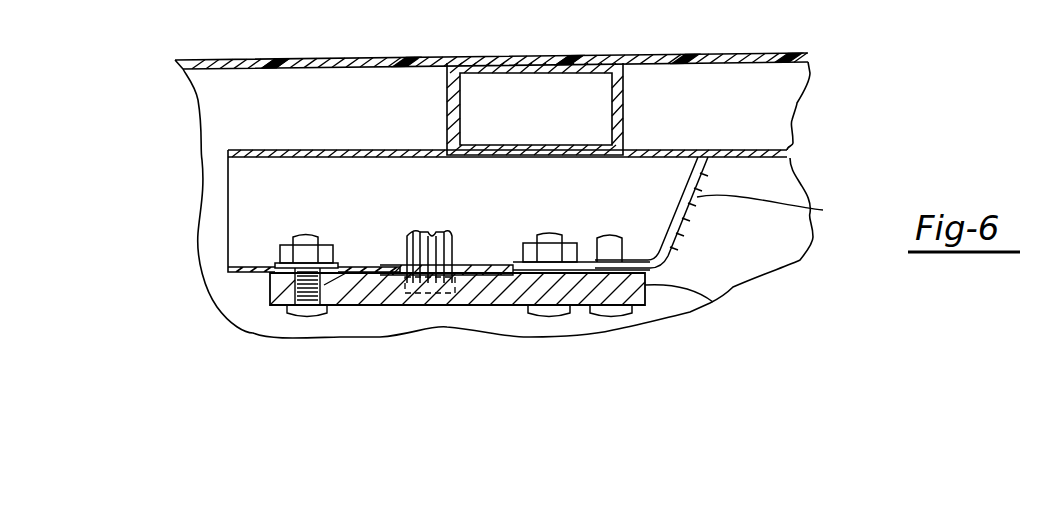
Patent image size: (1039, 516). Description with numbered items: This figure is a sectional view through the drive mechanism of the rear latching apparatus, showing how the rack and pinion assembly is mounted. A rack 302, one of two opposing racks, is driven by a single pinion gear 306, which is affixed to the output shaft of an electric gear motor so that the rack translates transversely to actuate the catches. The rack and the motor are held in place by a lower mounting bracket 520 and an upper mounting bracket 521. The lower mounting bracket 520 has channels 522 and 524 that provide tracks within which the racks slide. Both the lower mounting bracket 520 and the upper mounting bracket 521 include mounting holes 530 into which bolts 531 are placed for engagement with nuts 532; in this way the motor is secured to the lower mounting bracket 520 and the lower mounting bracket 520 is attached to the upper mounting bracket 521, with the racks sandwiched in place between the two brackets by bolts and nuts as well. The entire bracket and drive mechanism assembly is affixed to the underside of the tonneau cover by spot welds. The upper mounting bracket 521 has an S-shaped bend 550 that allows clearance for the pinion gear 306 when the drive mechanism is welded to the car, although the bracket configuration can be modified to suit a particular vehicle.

The rack 302 is at (491, 34).
The pinion gear 306 is at (443, 233).
The lower mounting bracket 520 is at (713, 302).
The upper mounting bracket 521 is at (787, 155).
The channel 522 is at (364, 268).
The channel 524 is at (487, 273).
The mounting hole 530 is at (350, 267).
The bolt 531 is at (298, 236).
The nut 532 is at (275, 251).
The S-shaped bend 550 is at (807, 207).